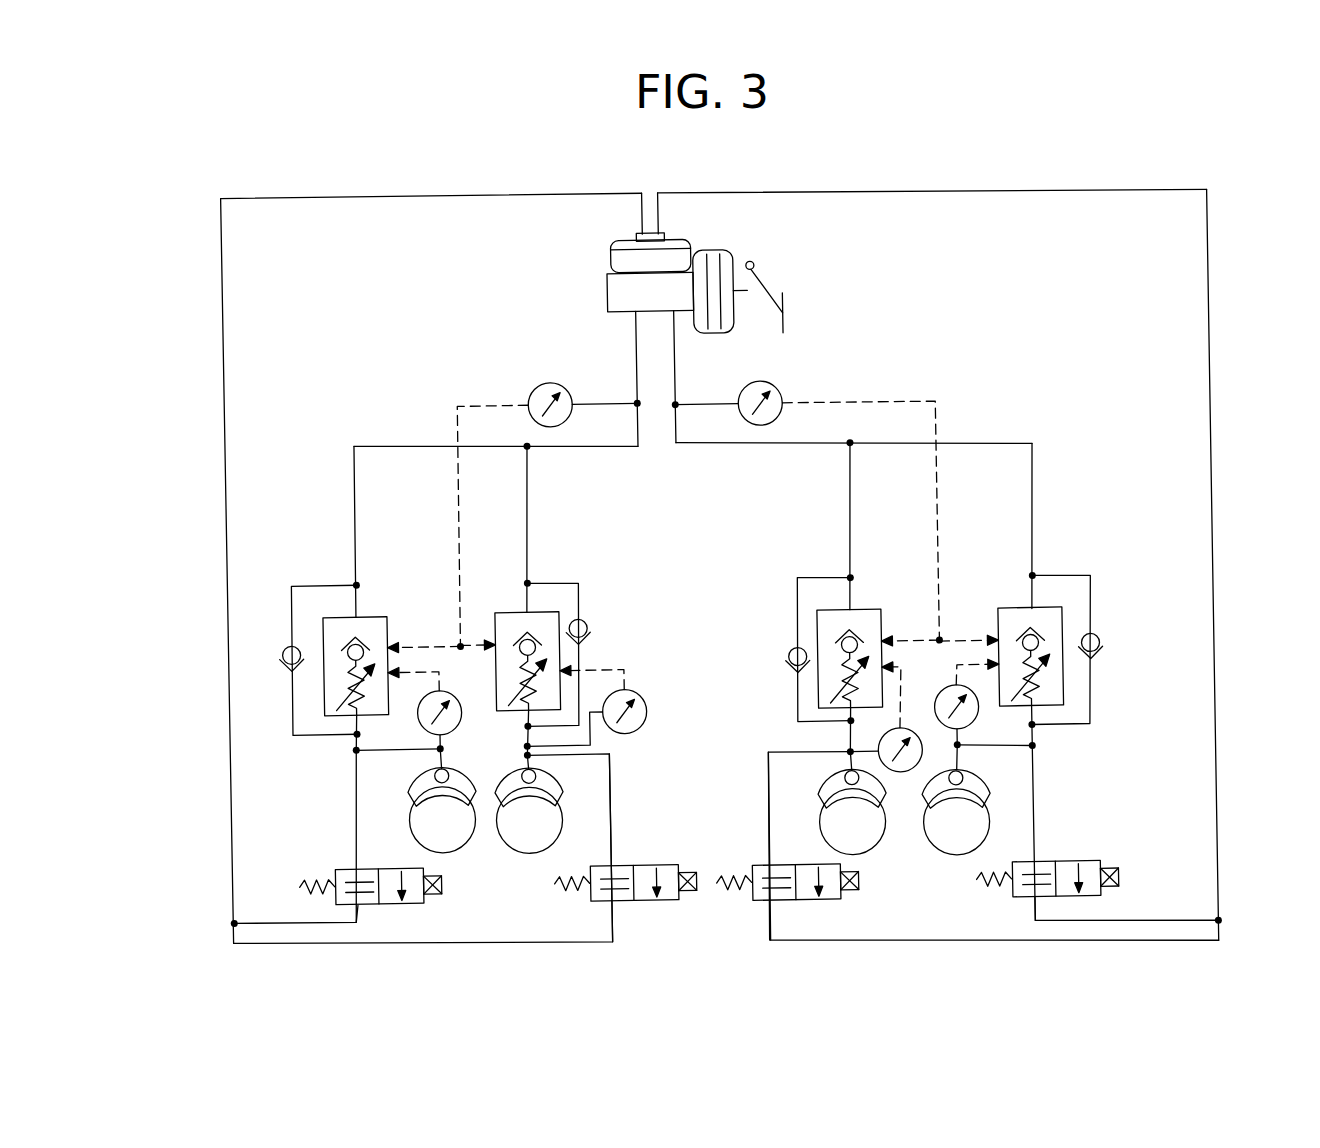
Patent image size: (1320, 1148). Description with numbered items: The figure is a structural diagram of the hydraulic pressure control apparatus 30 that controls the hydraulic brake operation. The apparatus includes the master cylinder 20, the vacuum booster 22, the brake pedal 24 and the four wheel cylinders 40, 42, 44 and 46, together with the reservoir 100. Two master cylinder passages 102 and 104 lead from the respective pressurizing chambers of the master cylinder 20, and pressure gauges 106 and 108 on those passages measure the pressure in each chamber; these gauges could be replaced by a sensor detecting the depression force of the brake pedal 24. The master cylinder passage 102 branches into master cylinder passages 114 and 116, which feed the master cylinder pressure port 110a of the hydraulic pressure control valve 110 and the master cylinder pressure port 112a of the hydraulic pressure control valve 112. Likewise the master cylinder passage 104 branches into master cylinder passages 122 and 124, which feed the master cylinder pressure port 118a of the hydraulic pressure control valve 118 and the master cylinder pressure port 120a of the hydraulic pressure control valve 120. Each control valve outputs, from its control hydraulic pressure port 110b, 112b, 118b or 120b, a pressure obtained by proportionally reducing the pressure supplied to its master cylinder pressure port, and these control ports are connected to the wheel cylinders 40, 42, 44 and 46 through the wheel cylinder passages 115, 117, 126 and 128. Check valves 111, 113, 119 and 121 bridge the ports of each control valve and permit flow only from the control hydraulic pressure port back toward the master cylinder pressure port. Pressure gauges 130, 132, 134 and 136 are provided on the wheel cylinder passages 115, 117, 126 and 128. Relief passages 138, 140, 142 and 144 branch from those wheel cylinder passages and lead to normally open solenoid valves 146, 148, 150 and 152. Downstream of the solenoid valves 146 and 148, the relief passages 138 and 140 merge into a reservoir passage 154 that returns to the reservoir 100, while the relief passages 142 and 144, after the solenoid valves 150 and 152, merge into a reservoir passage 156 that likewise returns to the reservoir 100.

The hydraulic pressure control apparatus 30 is at (869, 182).
The master cylinder 20 is at (679, 290).
The vacuum booster 22 is at (739, 250).
The brake pedal 24 is at (778, 312).
The wheel cylinder 40 is at (414, 810).
The wheel cylinder 42 is at (552, 778).
The wheel cylinder 44 is at (830, 772).
The wheel cylinder 46 is at (972, 774).
The reservoir 100 is at (634, 250).
The master cylinder passage 102 is at (640, 331).
The master cylinder passage 104 is at (678, 402).
The pressure gauge 106 is at (544, 385).
The pressure gauge 108 is at (781, 403).
The hydraulic pressure control valve 110 is at (340, 609).
The master cylinder pressure port 110a is at (358, 610).
The control hydraulic pressure port 110b is at (350, 736).
The check valve 111 is at (283, 655).
The hydraulic pressure control valve 112 is at (502, 610).
The master cylinder pressure port 112a is at (524, 608).
The control hydraulic pressure port 112b is at (524, 720).
The check valve 113 is at (576, 616).
The master cylinder passage 114 is at (356, 440).
The wheel cylinder passage 115 is at (410, 746).
The master cylinder passage 116 is at (525, 487).
The wheel cylinder passage 117 is at (521, 748).
The hydraulic pressure control valve 118 is at (816, 614).
The master cylinder pressure port 118a is at (850, 610).
The control hydraulic pressure port 118b is at (834, 718).
The check valve 119 is at (796, 650).
The hydraulic pressure control valve 120 is at (1016, 612).
The master cylinder pressure port 120a is at (1028, 612).
The control hydraulic pressure port 120b is at (1036, 724).
The check valve 121 is at (1098, 644).
The master cylinder passage 122 is at (846, 489).
The master cylinder passage 124 is at (1040, 474).
The wheel cylinder passage 126 is at (845, 736).
The wheel cylinder passage 128 is at (1030, 750).
The pressure gauge 130 is at (452, 696).
The pressure gauge 132 is at (640, 700).
The pressure gauge 134 is at (902, 773).
The pressure gauge 136 is at (948, 694).
The relief passage 138 is at (351, 790).
The relief passage 140 is at (608, 780).
The relief passage 142 is at (764, 806).
The relief passage 144 is at (1032, 816).
The normally open solenoid valve 146 is at (406, 893).
The normally open solenoid valve 148 is at (642, 896).
The normally open solenoid valve 150 is at (833, 895).
The normally open solenoid valve 152 is at (1094, 896).
The reservoir passage 154 is at (227, 530).
The reservoir passage 156 is at (1214, 538).